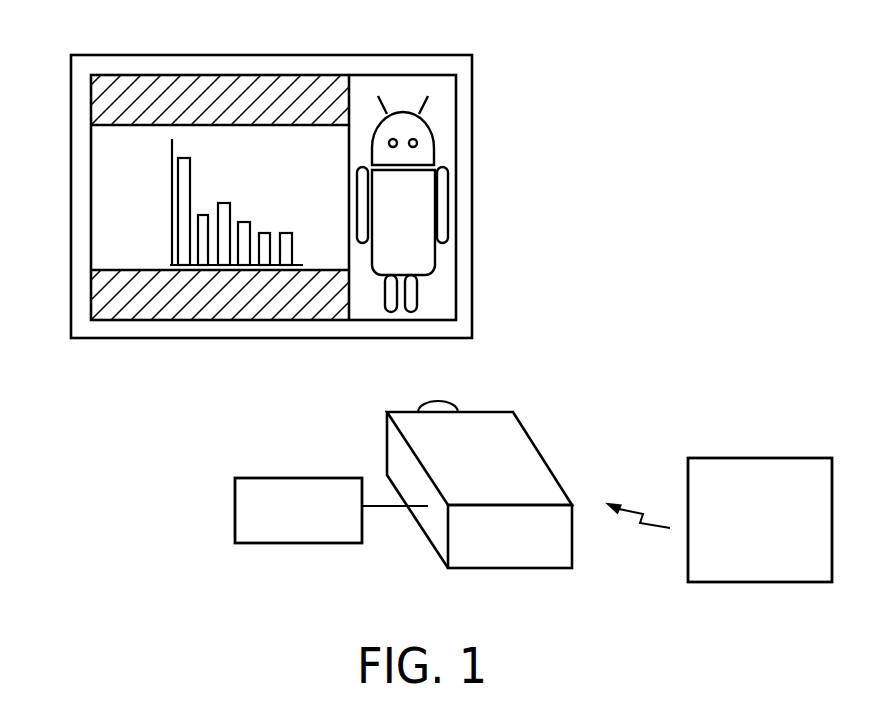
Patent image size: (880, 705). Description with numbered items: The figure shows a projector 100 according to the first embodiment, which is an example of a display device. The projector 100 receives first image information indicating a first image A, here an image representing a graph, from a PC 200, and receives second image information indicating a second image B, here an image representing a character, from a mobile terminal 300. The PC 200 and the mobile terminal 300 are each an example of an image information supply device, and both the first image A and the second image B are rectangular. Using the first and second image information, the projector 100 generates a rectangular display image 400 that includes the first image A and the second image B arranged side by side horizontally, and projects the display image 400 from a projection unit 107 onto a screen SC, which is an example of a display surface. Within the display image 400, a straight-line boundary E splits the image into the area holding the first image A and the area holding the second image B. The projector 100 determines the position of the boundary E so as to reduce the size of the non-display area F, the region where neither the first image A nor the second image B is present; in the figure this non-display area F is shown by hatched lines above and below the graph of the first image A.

The screen SC is at (467, 65).
The display image 400 is at (457, 101).
The non-display area F is at (105, 95).
The boundary E is at (340, 98).
The first image A is at (108, 155).
The second image B is at (458, 120).
The projector 100 is at (528, 465).
The projection unit 107 is at (420, 405).
The PC 200 is at (290, 478).
The mobile terminal 300 is at (730, 458).